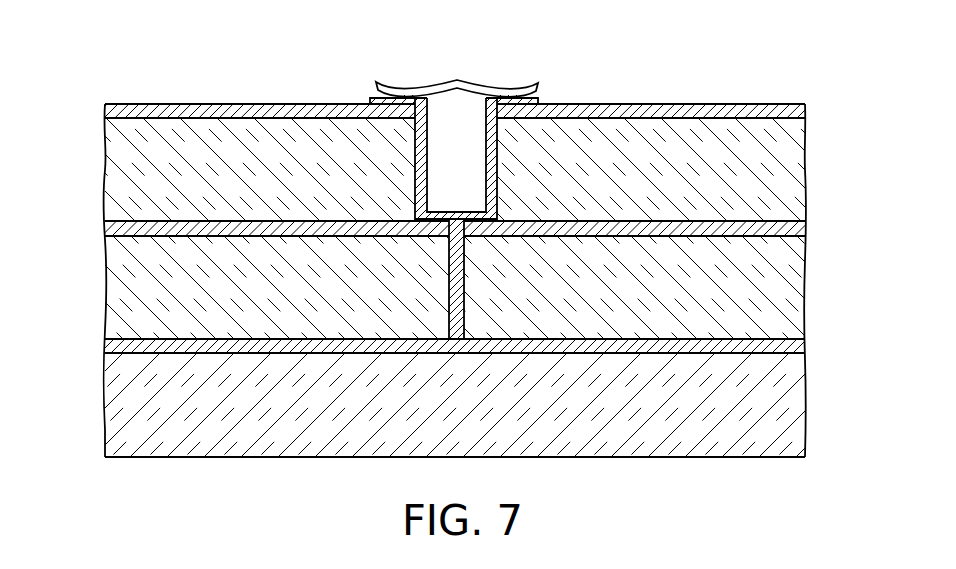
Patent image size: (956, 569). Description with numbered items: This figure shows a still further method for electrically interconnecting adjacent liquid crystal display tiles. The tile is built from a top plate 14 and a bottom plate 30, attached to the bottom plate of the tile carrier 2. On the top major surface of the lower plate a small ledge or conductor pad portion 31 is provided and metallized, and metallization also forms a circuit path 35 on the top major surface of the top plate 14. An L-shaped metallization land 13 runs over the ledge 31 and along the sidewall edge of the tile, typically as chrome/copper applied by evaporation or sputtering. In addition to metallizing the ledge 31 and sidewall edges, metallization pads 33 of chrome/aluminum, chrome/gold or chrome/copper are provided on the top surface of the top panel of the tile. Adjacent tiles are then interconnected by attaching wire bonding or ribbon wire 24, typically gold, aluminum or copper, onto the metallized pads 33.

The bottom plate of the tile carrier 2 is at (690, 412).
The L-shaped metallization land 13 is at (492, 187).
The top plate 14 is at (667, 187).
The wire bonding or ribbon wire 24 is at (462, 80).
The bottom plate 30 is at (668, 301).
The ledge or conductor pad portion 31 is at (428, 222).
The metallization pads 33 is at (368, 98).
The circuit path 35 is at (143, 104).